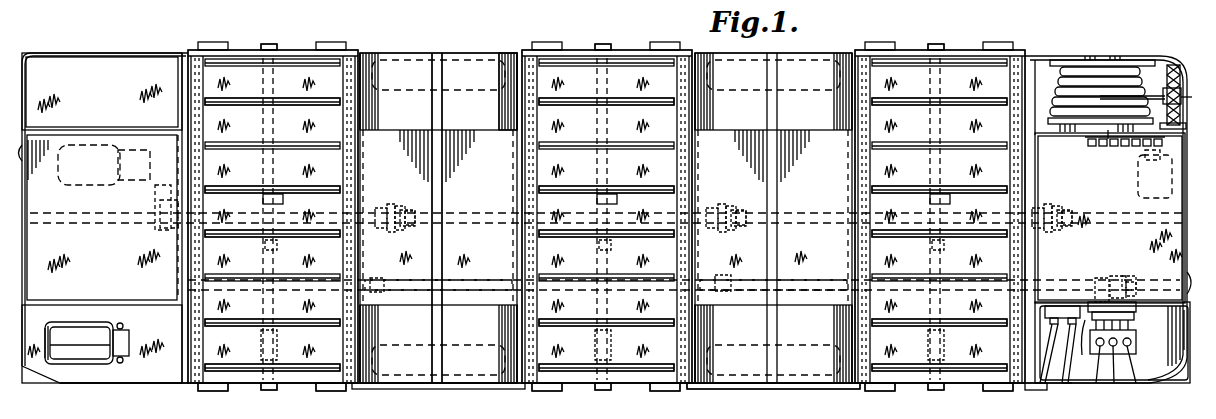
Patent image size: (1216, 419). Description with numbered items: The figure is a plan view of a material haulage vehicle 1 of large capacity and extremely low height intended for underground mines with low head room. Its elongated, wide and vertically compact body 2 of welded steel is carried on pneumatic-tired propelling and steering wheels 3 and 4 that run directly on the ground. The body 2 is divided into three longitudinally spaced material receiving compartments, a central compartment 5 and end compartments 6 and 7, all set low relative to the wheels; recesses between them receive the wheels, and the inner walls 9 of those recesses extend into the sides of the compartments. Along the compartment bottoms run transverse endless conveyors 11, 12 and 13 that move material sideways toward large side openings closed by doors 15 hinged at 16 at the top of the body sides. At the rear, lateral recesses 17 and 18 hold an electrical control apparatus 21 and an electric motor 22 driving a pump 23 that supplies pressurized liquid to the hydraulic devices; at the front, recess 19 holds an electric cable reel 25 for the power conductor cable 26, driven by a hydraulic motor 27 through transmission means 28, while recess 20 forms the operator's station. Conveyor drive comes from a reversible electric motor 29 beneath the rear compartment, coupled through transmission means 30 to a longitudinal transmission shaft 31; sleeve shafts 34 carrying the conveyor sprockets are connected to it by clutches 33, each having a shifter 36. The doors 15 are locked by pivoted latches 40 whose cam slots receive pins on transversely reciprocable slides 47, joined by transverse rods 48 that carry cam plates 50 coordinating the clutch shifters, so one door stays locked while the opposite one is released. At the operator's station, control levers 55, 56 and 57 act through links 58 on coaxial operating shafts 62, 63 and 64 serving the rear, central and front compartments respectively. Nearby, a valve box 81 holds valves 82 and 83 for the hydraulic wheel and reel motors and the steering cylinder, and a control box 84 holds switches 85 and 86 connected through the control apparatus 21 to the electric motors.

The material haulage vehicle 1 is at (823, 52).
The body 2 is at (832, 384).
The propelling and steering wheel 3 is at (405, 55).
The propelling and steering wheel 4 is at (790, 70).
The central compartment 5 is at (495, 140).
The end compartment 6 is at (173, 140).
The end compartment 7 is at (1042, 58).
The inner wall 9 is at (418, 292).
The endless conveyor 11 is at (628, 80).
The endless conveyor 12 is at (290, 80).
The endless conveyor 13 is at (958, 75).
The door 15 is at (248, 388).
The hinge 16 is at (208, 388).
The lateral recess 17 is at (32, 72).
The lateral recess 18 is at (38, 372).
The lateral recess 19 is at (1178, 80).
The lateral recess 20 is at (1168, 368).
The electrical control apparatus 21 is at (82, 80).
The electric motor 22 is at (85, 358).
The pump 23 is at (116, 360).
The electric cable reel 25 is at (1094, 60).
The power conductor cable 26 is at (1127, 80).
The motor 27 is at (1138, 186).
The transmission means 28 is at (1128, 148).
The electric motor 29 is at (98, 172).
The transmission means 30 is at (152, 210).
The transmission shaft 31 is at (468, 212).
The clutch 33 is at (385, 210).
The sleeve shaft 34 is at (318, 188).
The shifter 36 is at (410, 212).
The latch 40 is at (268, 43).
The slide 47 is at (262, 88).
The transverse rod 48 is at (270, 312).
The cam plate 50 is at (270, 240).
The control lever 55 is at (1098, 383).
The control lever 56 is at (1114, 383).
The control lever 57 is at (1136, 383).
The link 58 is at (1133, 322).
The operating shaft 62 is at (378, 276).
The operating shaft 63 is at (725, 272).
The operating shaft 64 is at (1092, 276).
The valve box 81 is at (1135, 302).
The control valve 82 is at (1090, 338).
The control valve 83 is at (1135, 343).
The control box 84 is at (1052, 305).
The control switch 85 is at (1044, 383).
The control switch 86 is at (1068, 383).